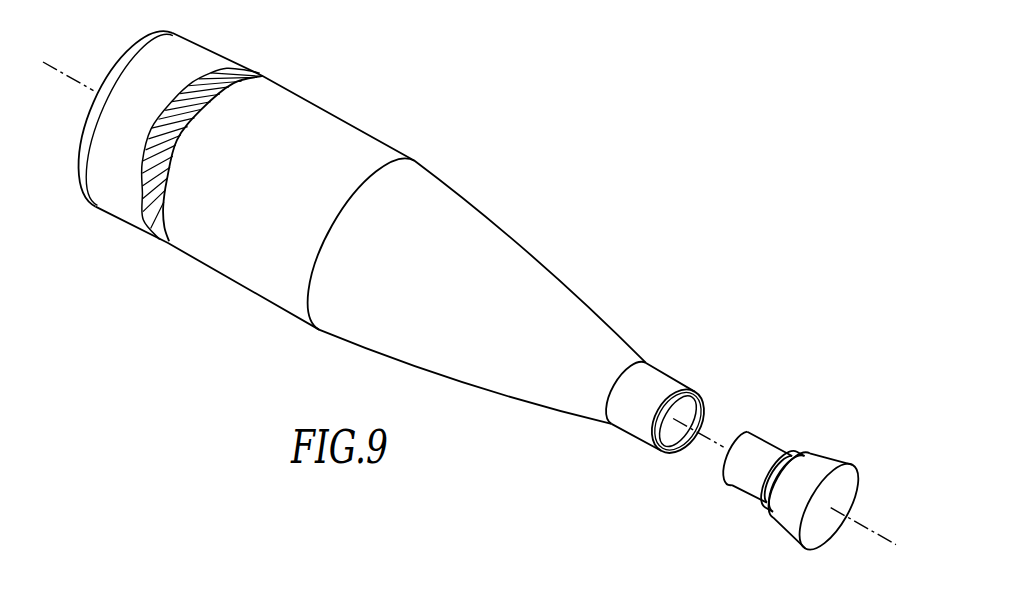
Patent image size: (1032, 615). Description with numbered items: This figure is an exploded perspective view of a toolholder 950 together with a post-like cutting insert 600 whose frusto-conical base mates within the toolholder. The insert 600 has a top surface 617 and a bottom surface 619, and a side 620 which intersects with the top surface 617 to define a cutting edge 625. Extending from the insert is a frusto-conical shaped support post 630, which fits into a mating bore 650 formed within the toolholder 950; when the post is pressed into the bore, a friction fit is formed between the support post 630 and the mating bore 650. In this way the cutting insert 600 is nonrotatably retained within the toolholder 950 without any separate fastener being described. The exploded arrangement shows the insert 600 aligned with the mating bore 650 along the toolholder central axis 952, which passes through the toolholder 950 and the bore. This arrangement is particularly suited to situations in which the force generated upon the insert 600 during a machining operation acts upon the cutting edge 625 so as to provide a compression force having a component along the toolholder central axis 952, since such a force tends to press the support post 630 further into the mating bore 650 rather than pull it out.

The toolholder central axis 952 is at (53, 52).
The toolholder 950 is at (505, 234).
The mating bore 650 is at (703, 412).
The cutting insert 600 is at (770, 491).
The bottom surface 619 is at (721, 459).
The support post 630 is at (746, 478).
The side 620 is at (786, 522).
The cutting edge 625 is at (818, 553).
The top surface 617 is at (831, 536).